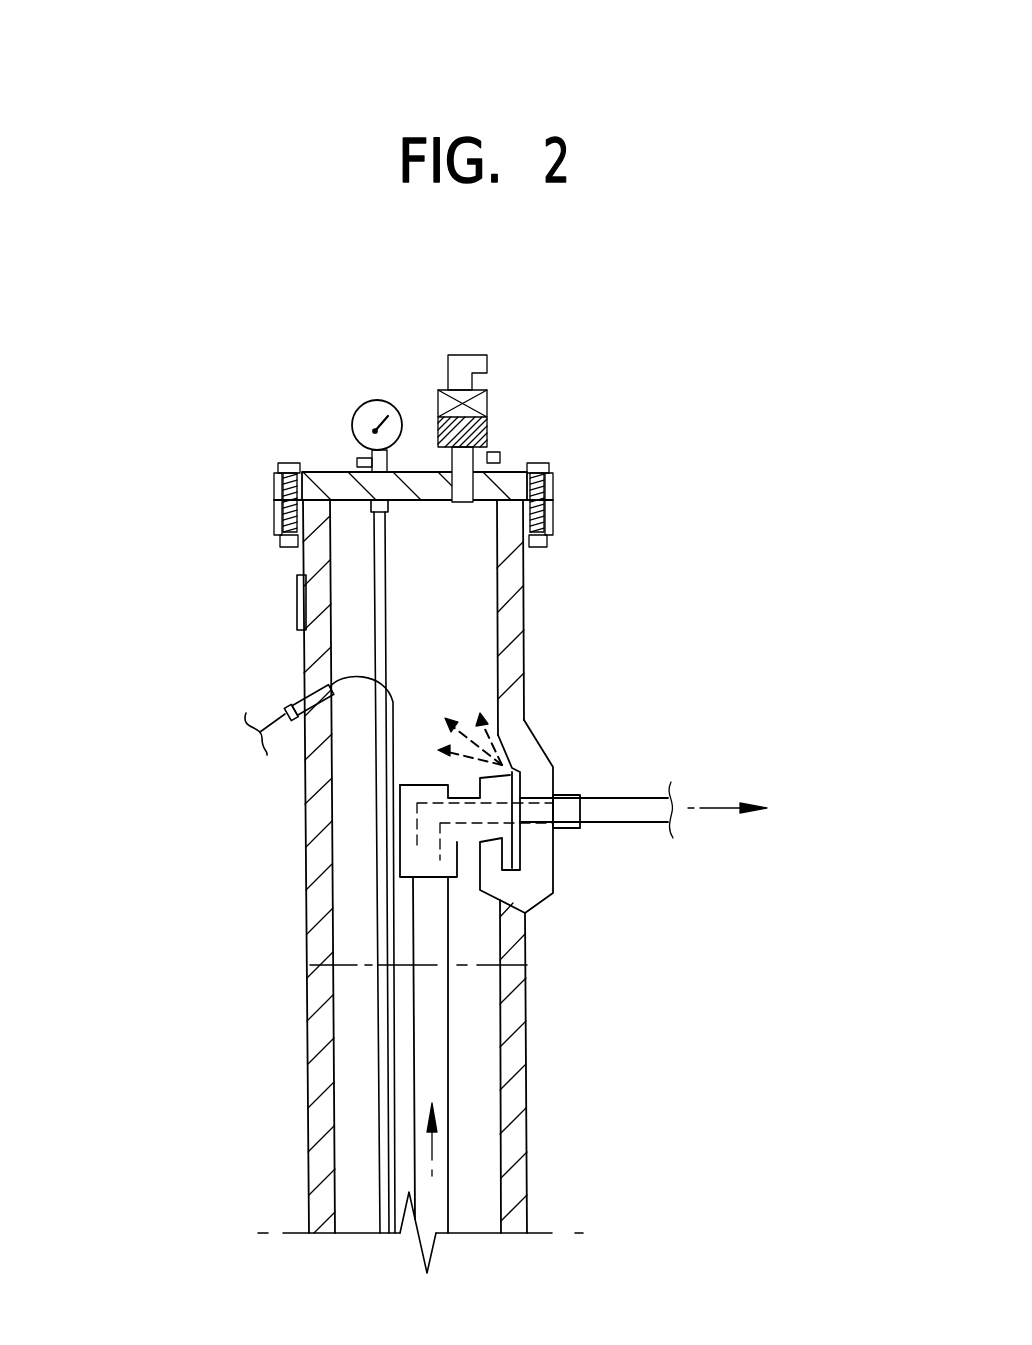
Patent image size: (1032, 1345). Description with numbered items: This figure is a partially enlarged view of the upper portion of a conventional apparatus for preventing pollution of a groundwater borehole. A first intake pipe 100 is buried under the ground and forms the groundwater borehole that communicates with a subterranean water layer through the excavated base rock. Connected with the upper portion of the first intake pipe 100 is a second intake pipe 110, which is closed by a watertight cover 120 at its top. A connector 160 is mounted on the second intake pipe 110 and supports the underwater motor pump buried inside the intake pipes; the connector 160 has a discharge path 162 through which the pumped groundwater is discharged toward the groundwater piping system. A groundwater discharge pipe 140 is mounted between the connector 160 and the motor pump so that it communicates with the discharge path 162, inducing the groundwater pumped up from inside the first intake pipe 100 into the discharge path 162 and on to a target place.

The first intake pipe 100 is at (513, 1175).
The second intake pipe 110 is at (318, 860).
The watertight cover 120 is at (323, 471).
The groundwater discharge pipe 140 is at (433, 1067).
The connector 160 is at (563, 905).
The discharge path 162 is at (557, 797).